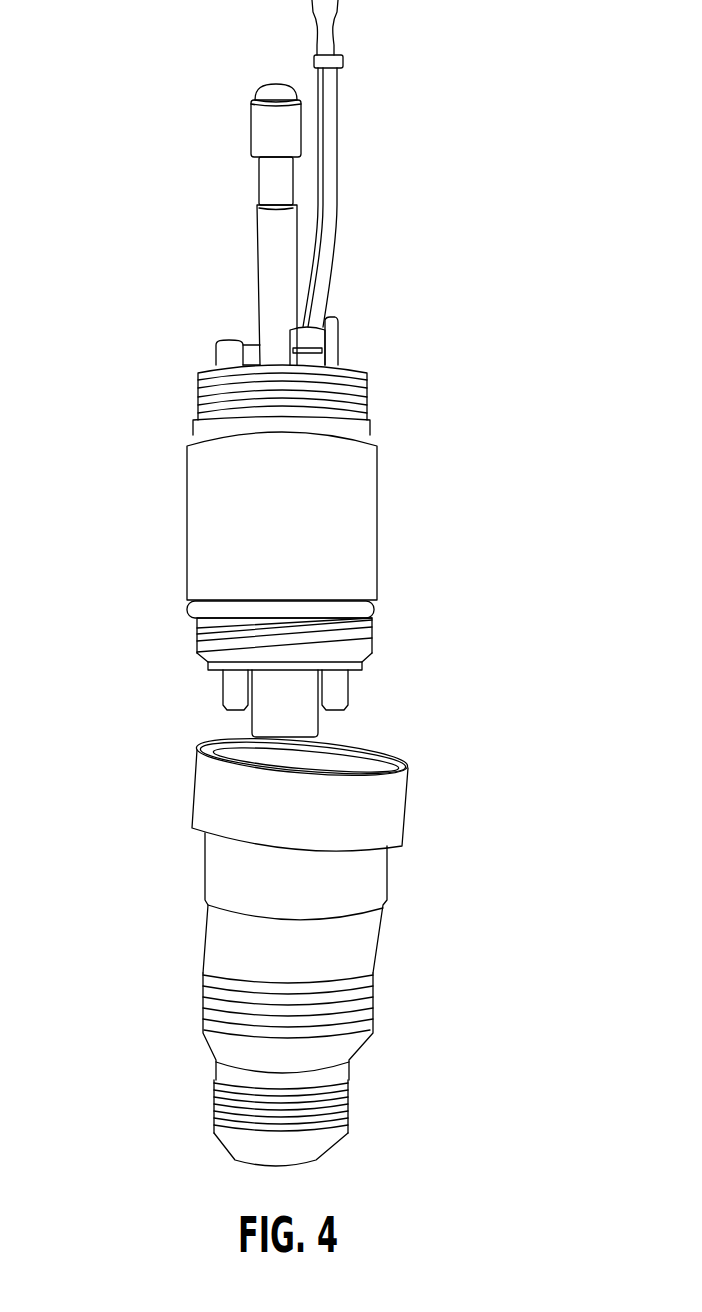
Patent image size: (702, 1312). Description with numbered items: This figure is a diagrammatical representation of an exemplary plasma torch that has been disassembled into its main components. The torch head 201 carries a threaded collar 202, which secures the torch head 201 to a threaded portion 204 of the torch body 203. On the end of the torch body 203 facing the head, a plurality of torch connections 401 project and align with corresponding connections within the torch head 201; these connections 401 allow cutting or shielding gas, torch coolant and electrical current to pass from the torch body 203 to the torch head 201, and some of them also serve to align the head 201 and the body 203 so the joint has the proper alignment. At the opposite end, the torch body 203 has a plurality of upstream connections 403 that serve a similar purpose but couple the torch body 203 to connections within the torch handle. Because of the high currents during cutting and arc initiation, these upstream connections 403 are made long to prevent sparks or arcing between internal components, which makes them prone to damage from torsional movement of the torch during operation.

The torch head 201 is at (377, 952).
The threaded collar 202 is at (405, 808).
The torch body 203 is at (377, 500).
The threaded portion 204 is at (373, 638).
The torch connections 401 is at (200, 685).
The upstream connections 403 is at (399, 142).